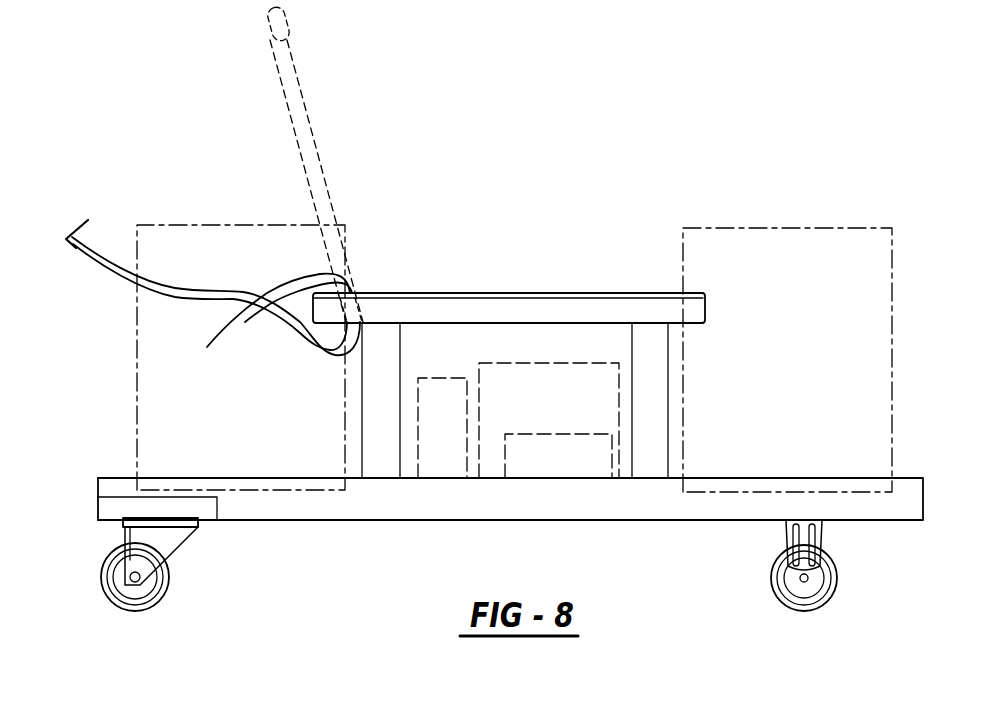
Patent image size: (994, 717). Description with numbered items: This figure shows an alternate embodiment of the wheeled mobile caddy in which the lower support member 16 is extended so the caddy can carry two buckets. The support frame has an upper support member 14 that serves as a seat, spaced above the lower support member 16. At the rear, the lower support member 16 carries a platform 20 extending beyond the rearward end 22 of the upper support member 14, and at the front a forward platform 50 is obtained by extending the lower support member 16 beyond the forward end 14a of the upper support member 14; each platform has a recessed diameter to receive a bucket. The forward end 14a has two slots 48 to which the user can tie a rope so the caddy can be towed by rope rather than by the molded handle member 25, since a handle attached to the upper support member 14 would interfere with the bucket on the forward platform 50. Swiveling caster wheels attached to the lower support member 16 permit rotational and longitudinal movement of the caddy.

The upper support member 14 is at (573, 293).
The forward end of the upper support member 14a is at (313, 311).
The lower support member 16 is at (512, 521).
The platform 20 is at (98, 512).
The rearward end of the upper support member 22 is at (705, 312).
The molded handle member 25 is at (288, 32).
The slots 48 is at (363, 297).
The forward platform 50 is at (98, 497).